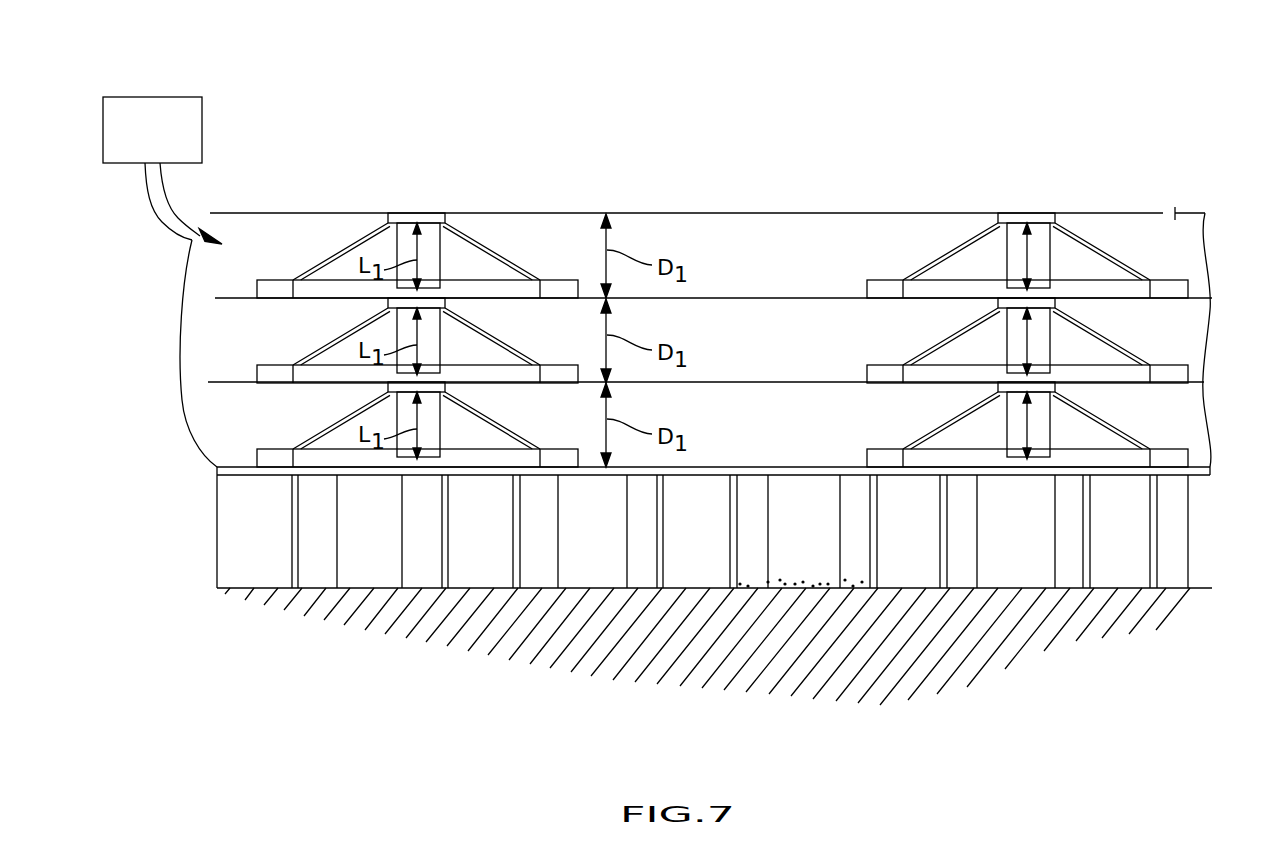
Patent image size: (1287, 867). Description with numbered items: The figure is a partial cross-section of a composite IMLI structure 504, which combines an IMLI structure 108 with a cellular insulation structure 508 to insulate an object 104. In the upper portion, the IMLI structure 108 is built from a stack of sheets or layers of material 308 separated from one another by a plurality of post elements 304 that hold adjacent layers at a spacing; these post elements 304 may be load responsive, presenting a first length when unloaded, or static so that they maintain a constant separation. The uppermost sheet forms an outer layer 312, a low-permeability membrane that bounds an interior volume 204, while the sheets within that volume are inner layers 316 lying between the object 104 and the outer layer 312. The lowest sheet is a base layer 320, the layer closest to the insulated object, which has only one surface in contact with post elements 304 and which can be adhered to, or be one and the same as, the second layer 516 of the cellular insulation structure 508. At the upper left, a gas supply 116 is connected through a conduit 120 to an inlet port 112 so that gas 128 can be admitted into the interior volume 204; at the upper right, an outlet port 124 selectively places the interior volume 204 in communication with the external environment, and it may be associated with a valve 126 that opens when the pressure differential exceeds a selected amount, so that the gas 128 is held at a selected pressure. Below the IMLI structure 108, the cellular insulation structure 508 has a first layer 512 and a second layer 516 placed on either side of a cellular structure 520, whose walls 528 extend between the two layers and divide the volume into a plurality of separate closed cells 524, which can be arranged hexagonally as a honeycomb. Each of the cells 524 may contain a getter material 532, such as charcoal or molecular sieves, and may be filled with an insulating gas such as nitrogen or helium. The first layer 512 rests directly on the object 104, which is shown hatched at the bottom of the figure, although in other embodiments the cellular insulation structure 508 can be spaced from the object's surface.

The object being insulated 104 is at (1140, 620).
The IMLI structure 108 is at (470, 213).
The inlet port 112 is at (198, 227).
The gas supply 116 is at (197, 97).
The conduit 120 is at (148, 196).
The outlet port 124 is at (1163, 213).
The valve 126 is at (1190, 213).
The gas 128 is at (190, 217).
The interior volume 204 is at (1087, 220).
The post elements 304 is at (397, 252).
The layers of material 308 is at (735, 303).
The outer layer 312 is at (754, 213).
The inner layers 316 is at (755, 298).
The base layer 320 is at (755, 467).
The composite IMLI structure 504 is at (176, 281).
The cellular insulation structure 508 is at (1020, 590).
The first layer 512 is at (836, 576).
The second layer 516 is at (233, 477).
The cellular structure 520 is at (227, 562).
The cells 524 is at (374, 590).
The walls 528 is at (287, 590).
The getter material 532 is at (763, 577).